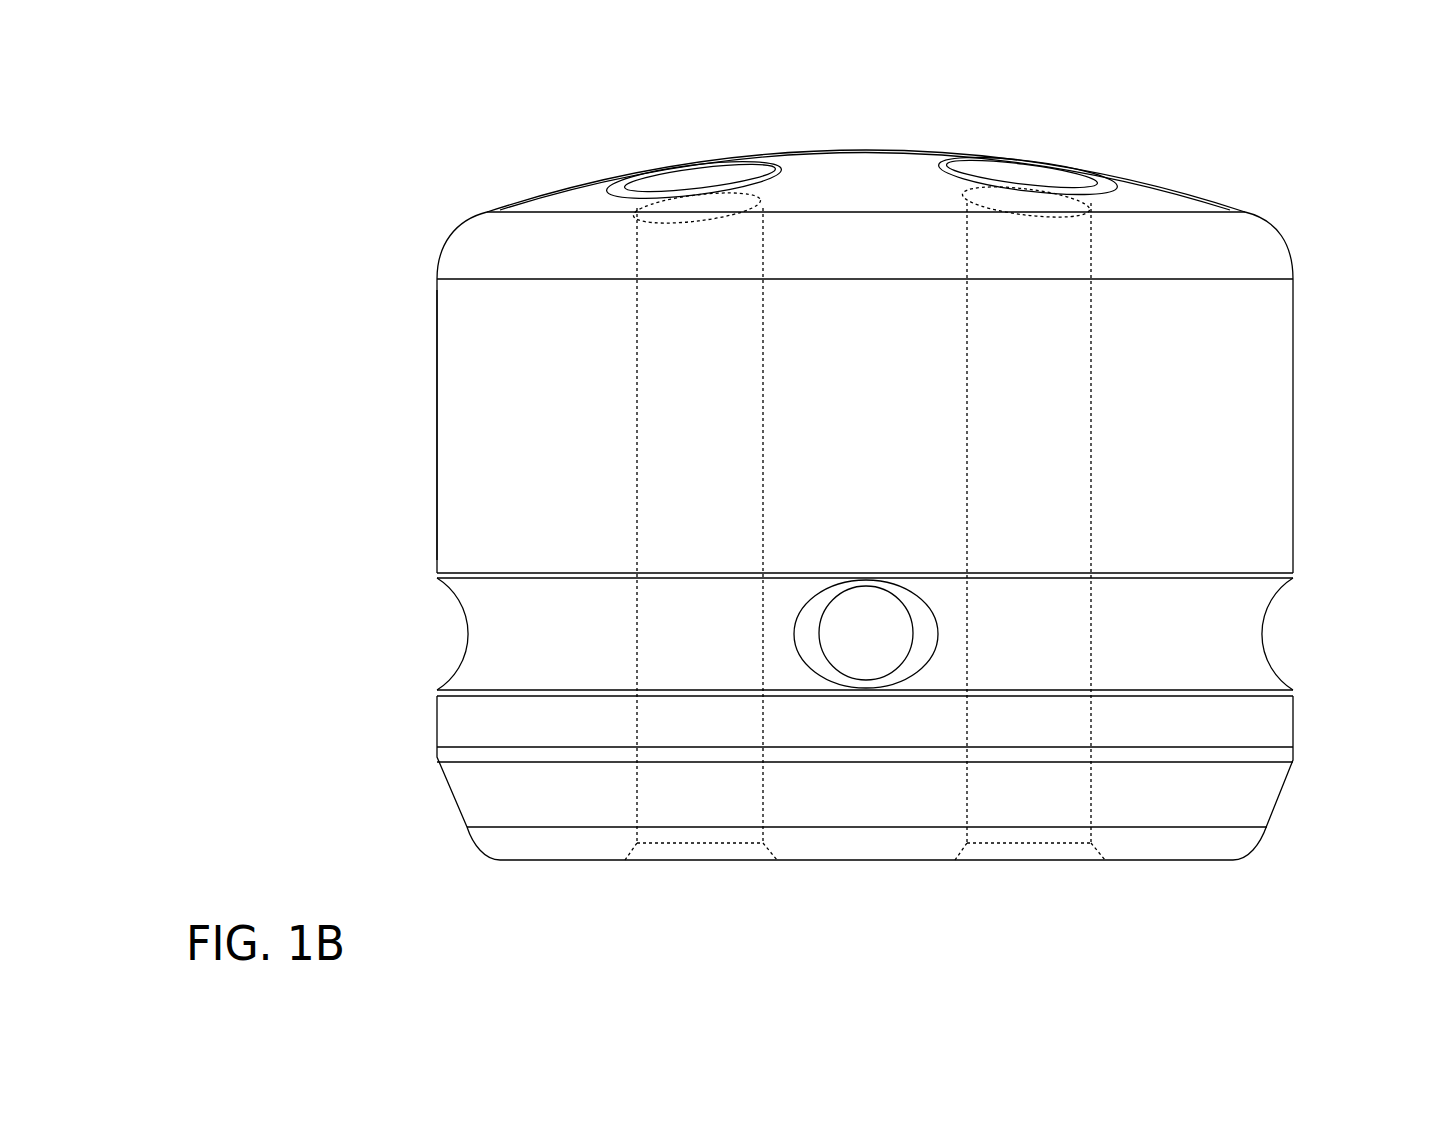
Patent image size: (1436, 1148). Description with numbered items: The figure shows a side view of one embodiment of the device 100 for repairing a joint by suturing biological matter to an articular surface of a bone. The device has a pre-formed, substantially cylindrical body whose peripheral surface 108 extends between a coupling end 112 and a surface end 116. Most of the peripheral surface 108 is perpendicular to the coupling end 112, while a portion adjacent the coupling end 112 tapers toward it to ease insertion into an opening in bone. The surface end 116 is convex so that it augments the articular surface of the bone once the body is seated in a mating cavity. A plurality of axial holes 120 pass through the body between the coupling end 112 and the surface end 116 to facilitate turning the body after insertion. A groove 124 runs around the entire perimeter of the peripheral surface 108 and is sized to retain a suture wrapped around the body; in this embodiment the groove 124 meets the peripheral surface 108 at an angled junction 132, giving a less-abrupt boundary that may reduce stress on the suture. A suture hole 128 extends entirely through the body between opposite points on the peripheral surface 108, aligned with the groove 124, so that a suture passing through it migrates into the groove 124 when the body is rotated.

The device 100 is at (265, 106).
The peripheral surface 108 is at (486, 376).
The coupling end 112 is at (572, 847).
The surface end 116 is at (570, 205).
The axial holes 120 is at (950, 152).
The groove 124 is at (1250, 635).
The suture hole 128 is at (876, 645).
The angled junction 132 is at (437, 690).